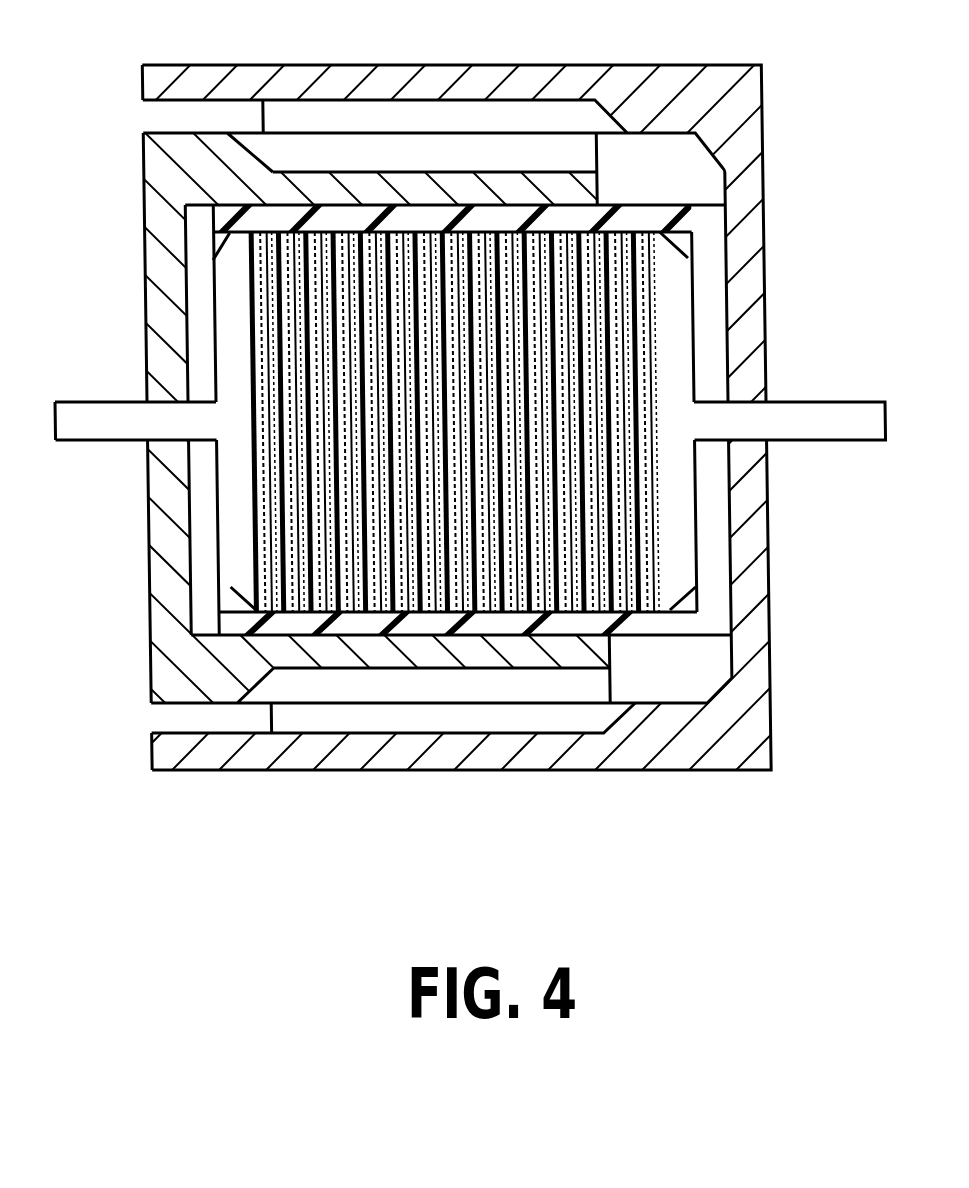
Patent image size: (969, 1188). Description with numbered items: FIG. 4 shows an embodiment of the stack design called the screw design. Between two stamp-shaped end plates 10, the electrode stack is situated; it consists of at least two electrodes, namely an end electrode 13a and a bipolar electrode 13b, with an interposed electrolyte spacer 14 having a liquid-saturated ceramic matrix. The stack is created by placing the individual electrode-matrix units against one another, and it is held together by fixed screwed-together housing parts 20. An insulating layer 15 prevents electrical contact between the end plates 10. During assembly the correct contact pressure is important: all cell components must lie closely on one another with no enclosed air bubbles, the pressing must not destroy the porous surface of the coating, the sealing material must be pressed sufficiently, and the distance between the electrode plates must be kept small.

The stamp-shaped end plate 10 is at (818, 408).
The end electrode 13a is at (227, 585).
The bipolar electrode 13b is at (284, 527).
The electrolyte spacer 14 is at (271, 560).
The insulating layer 15 is at (709, 594).
The housing part 20 is at (522, 118).